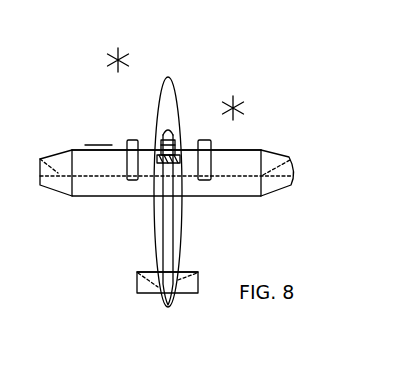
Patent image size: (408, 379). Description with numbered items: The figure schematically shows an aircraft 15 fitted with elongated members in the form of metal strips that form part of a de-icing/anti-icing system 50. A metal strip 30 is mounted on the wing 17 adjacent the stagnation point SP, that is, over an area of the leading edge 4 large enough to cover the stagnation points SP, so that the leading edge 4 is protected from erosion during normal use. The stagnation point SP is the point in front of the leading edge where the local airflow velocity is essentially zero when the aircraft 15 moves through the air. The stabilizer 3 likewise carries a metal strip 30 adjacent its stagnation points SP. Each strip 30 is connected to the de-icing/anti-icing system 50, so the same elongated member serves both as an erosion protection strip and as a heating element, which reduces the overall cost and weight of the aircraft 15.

The wing 17 is at (209, 67).
The leading edge 4 is at (252, 138).
The metal strip 30 is at (80, 148).
The de-icing/anti-icing system 50 is at (170, 138).
The stabilizer 3 is at (188, 294).
The stagnation point SP is at (218, 232).
The aircraft 15 is at (96, 242).